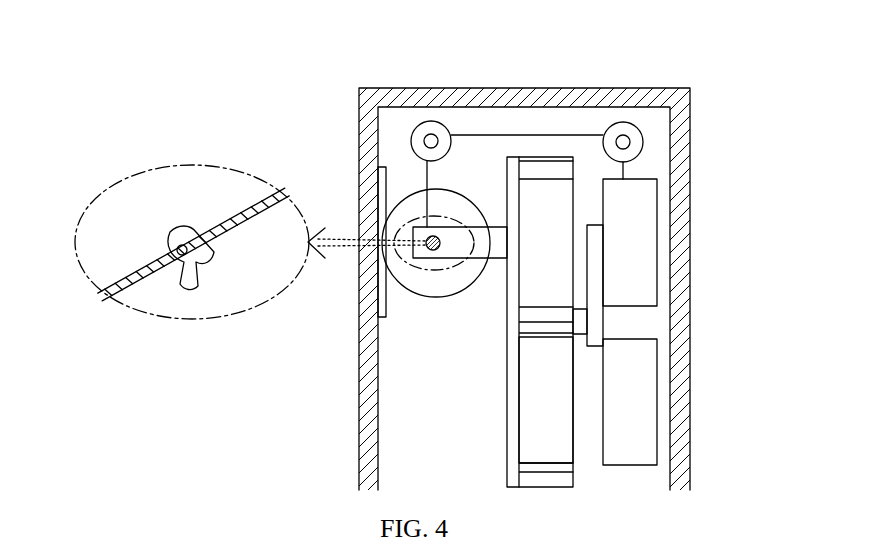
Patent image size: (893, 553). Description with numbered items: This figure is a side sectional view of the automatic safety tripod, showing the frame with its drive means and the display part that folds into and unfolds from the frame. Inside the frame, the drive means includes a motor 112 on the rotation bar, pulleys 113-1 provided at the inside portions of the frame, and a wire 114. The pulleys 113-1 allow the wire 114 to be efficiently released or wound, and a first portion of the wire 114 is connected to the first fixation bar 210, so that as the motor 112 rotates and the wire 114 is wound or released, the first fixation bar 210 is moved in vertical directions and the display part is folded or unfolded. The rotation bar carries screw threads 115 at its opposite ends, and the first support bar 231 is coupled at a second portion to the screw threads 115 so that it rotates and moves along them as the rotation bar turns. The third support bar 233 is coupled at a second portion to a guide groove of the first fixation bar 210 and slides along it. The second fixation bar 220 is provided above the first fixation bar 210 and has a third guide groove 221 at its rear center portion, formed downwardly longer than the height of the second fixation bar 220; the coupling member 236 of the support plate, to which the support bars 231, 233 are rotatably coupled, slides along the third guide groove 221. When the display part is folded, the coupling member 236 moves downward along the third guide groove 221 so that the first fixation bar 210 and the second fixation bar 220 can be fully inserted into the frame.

The pulley 113-1 is at (428, 121).
The wire 114 is at (526, 135).
The motor 112 is at (407, 208).
The screw threads 115 is at (147, 263).
The second fixation bar 220 is at (640, 207).
The first support bar 231 is at (560, 254).
The third support bar 233 is at (553, 382).
The third guide groove 221 is at (597, 289).
The coupling member 236 is at (582, 327).
The first fixation bar 210 is at (642, 435).